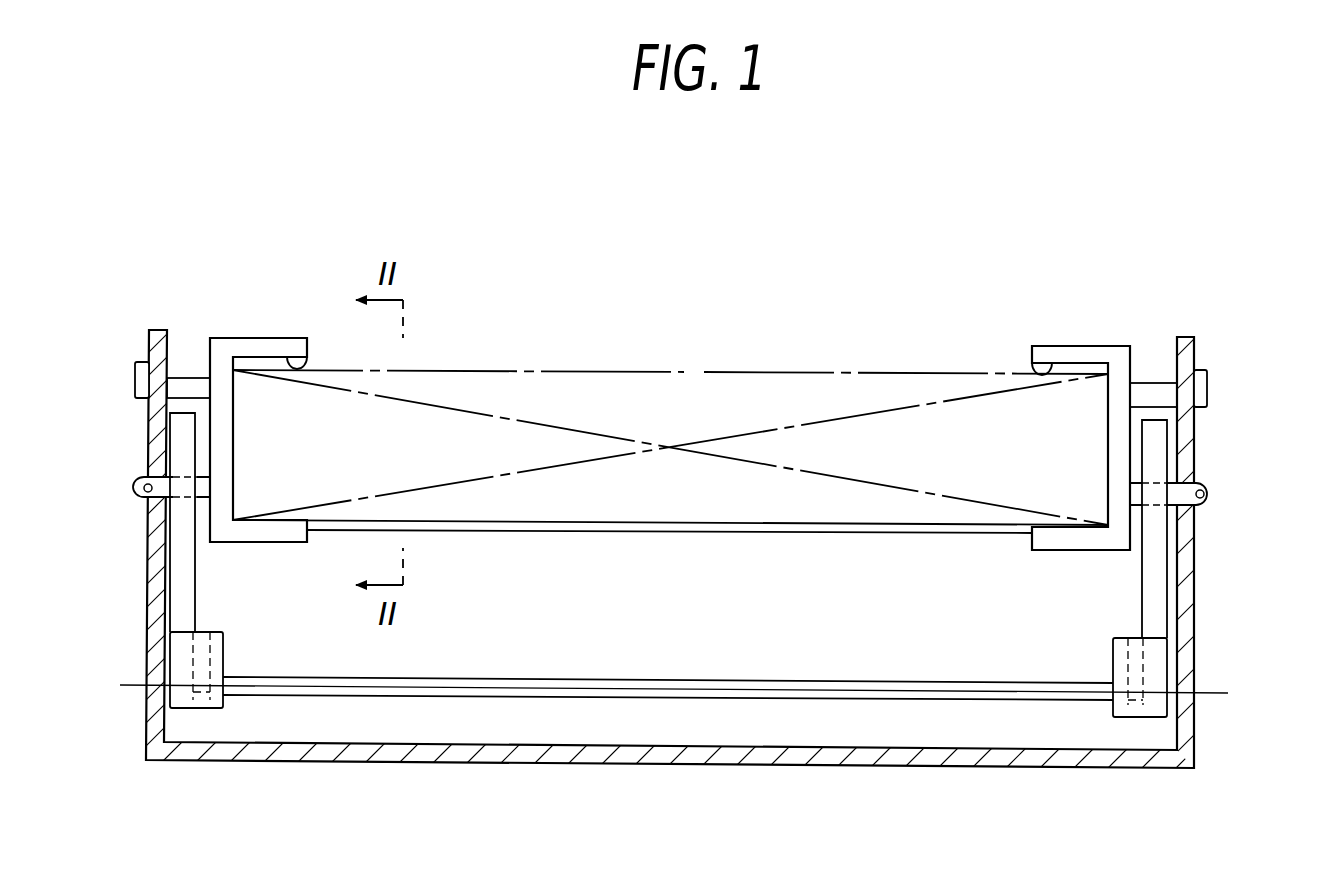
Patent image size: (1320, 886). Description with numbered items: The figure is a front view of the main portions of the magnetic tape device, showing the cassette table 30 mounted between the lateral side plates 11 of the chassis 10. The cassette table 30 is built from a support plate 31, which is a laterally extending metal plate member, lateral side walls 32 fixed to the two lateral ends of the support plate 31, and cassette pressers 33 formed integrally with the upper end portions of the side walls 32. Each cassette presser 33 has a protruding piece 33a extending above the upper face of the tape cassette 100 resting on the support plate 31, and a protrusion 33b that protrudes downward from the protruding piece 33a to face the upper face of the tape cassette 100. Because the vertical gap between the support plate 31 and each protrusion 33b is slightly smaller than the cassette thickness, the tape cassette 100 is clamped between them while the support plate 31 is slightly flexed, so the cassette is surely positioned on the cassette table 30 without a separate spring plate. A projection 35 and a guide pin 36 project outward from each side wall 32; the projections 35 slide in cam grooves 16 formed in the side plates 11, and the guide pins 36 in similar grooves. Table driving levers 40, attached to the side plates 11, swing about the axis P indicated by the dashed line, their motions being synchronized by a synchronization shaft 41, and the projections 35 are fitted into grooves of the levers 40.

The chassis 10 is at (990, 768).
The lateral side plate 11 is at (155, 410).
The cam groove 16 is at (146, 495).
The cassette table 30 is at (290, 558).
The support plate 31 is at (660, 533).
The lateral side wall 32 is at (230, 448).
The cassette presser 33 is at (277, 343).
The protruding piece 33a is at (250, 343).
The protrusion 33b is at (305, 366).
The projection 35 is at (138, 477).
The guide pin 36 is at (190, 350).
The table driving lever 40 is at (180, 577).
The synchronization shaft 41 is at (848, 675).
The tape cassette 100 is at (692, 372).
The axis P is at (1200, 700).